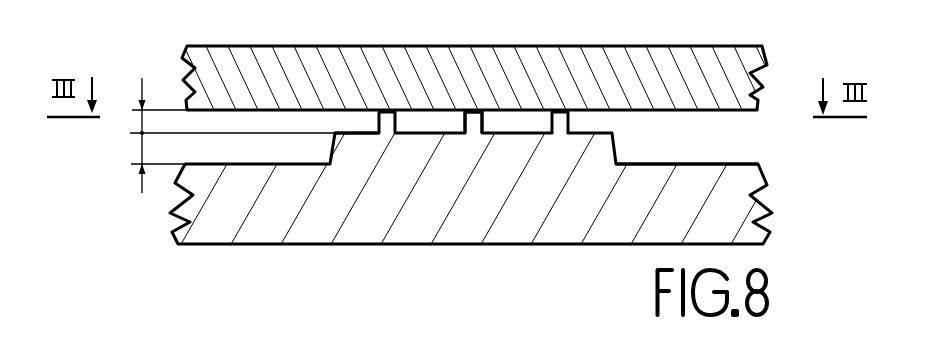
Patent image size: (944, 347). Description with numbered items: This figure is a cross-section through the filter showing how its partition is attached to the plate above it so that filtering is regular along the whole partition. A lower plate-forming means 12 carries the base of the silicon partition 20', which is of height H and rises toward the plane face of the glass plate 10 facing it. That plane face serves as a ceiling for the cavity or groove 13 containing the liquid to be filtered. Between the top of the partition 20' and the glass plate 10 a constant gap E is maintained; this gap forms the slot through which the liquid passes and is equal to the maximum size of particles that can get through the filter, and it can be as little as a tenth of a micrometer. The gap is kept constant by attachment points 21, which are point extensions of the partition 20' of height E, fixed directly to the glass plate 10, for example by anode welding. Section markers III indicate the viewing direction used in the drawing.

The glass plate 10 is at (188, 51).
The lower plate 12 is at (232, 217).
The cavity or groove 13 is at (712, 130).
The partition 20' is at (353, 210).
The attachment points 21 is at (471, 122).
The gap E is at (229, 104).
The height of the partition H is at (154, 167).
The section line III is at (457, 97).